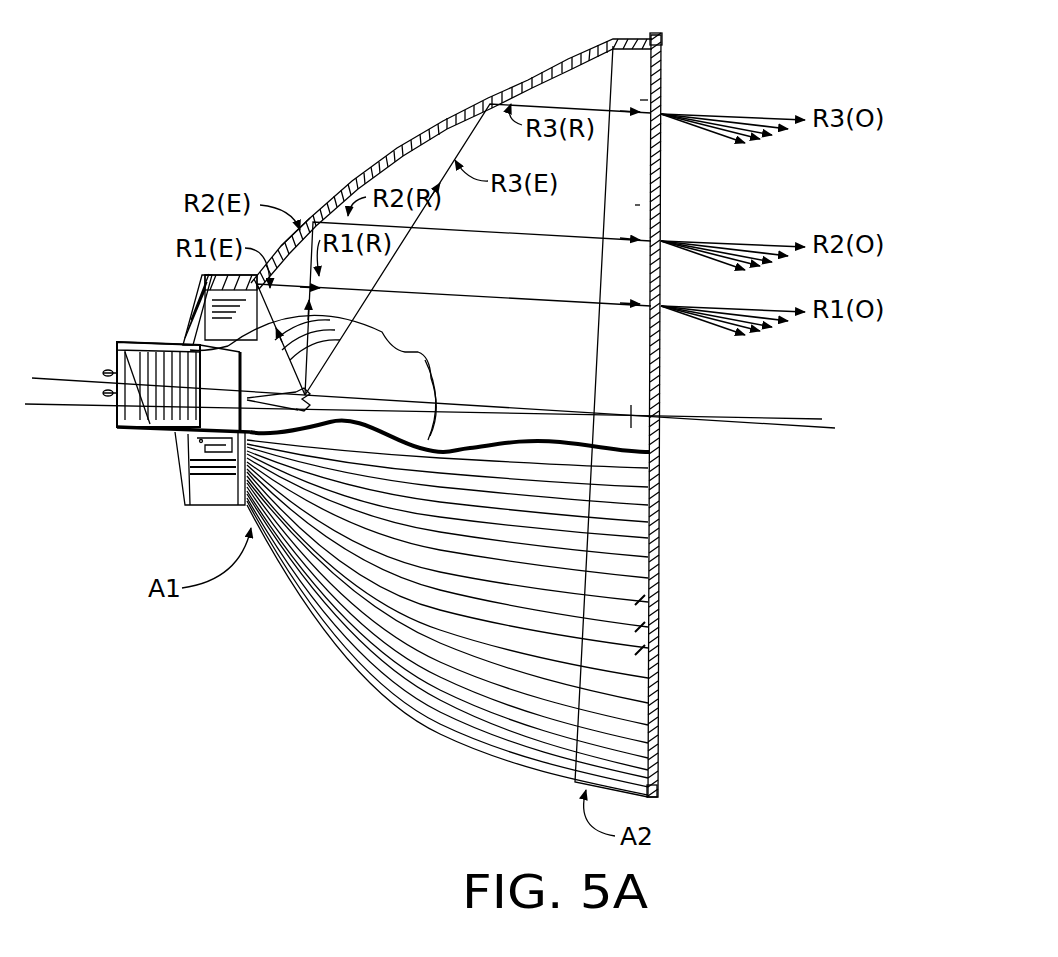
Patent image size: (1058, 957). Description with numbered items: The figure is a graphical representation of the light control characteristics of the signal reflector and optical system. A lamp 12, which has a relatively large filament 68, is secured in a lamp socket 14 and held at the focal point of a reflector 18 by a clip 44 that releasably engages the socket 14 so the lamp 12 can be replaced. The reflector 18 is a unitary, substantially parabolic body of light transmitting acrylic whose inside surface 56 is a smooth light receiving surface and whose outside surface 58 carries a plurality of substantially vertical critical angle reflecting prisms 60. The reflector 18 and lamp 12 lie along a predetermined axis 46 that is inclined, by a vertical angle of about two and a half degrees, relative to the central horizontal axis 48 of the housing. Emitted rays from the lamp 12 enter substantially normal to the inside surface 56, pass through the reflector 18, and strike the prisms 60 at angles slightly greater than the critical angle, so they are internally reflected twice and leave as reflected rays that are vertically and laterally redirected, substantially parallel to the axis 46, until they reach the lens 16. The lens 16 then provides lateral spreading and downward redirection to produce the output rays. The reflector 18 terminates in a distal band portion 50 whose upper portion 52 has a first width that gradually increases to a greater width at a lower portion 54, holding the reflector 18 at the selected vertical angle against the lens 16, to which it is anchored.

The lamp 12 is at (393, 336).
The lamp socket 14 is at (172, 336).
The lens 16 is at (666, 62).
The reflector device 18 is at (432, 124).
The clip 44 is at (205, 283).
The predetermined axis 46 is at (438, 405).
The central horizontal axis 48 is at (502, 410).
The distal band portion 50 is at (626, 204).
The upper portion 52 is at (640, 96).
The lower portion 54 is at (613, 782).
The inside surface 56 is at (555, 78).
The outside surface 58 is at (296, 224).
The critical angle reflecting prisms 60 is at (645, 652).
The filament 68 is at (318, 389).